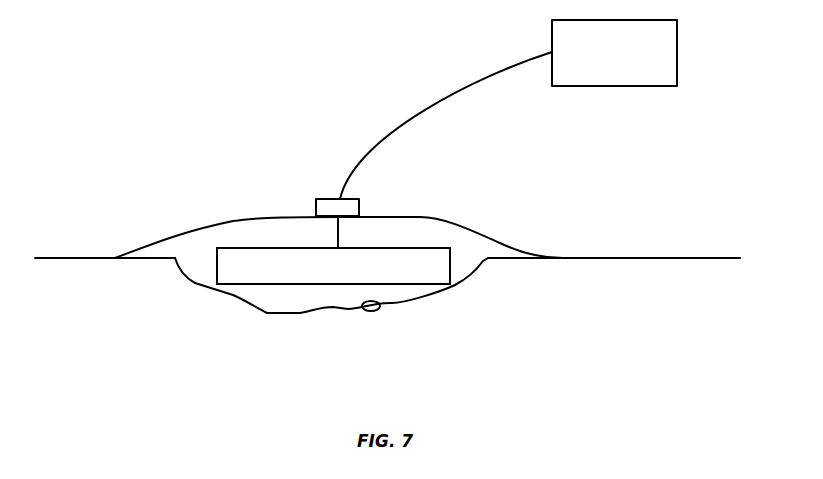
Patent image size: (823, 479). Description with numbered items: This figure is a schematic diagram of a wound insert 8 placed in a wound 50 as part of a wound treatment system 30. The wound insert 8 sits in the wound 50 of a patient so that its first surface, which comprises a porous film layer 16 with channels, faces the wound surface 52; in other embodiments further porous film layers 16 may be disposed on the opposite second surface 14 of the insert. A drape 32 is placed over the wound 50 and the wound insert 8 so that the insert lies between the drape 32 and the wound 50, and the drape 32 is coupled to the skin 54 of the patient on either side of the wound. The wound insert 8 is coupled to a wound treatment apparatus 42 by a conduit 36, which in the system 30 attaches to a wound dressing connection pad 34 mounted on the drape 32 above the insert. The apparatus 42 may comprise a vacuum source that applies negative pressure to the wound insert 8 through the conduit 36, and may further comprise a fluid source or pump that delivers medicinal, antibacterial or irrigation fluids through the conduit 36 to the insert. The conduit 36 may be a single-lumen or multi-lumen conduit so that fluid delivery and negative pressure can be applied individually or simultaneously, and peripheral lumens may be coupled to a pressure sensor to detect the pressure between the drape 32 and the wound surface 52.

The wound treatment system 30 is at (190, 74).
The wound treatment apparatus 42 is at (603, 62).
The conduit 36 is at (407, 123).
The wound dressing connection pad 34 is at (361, 199).
The drape 32 is at (442, 222).
The second surface 14 is at (250, 248).
The wound insert 8 is at (437, 268).
The porous film layer 16 is at (243, 284).
The wound surface 52 is at (384, 306).
The wound 50 is at (261, 354).
The skin 54 is at (70, 257).